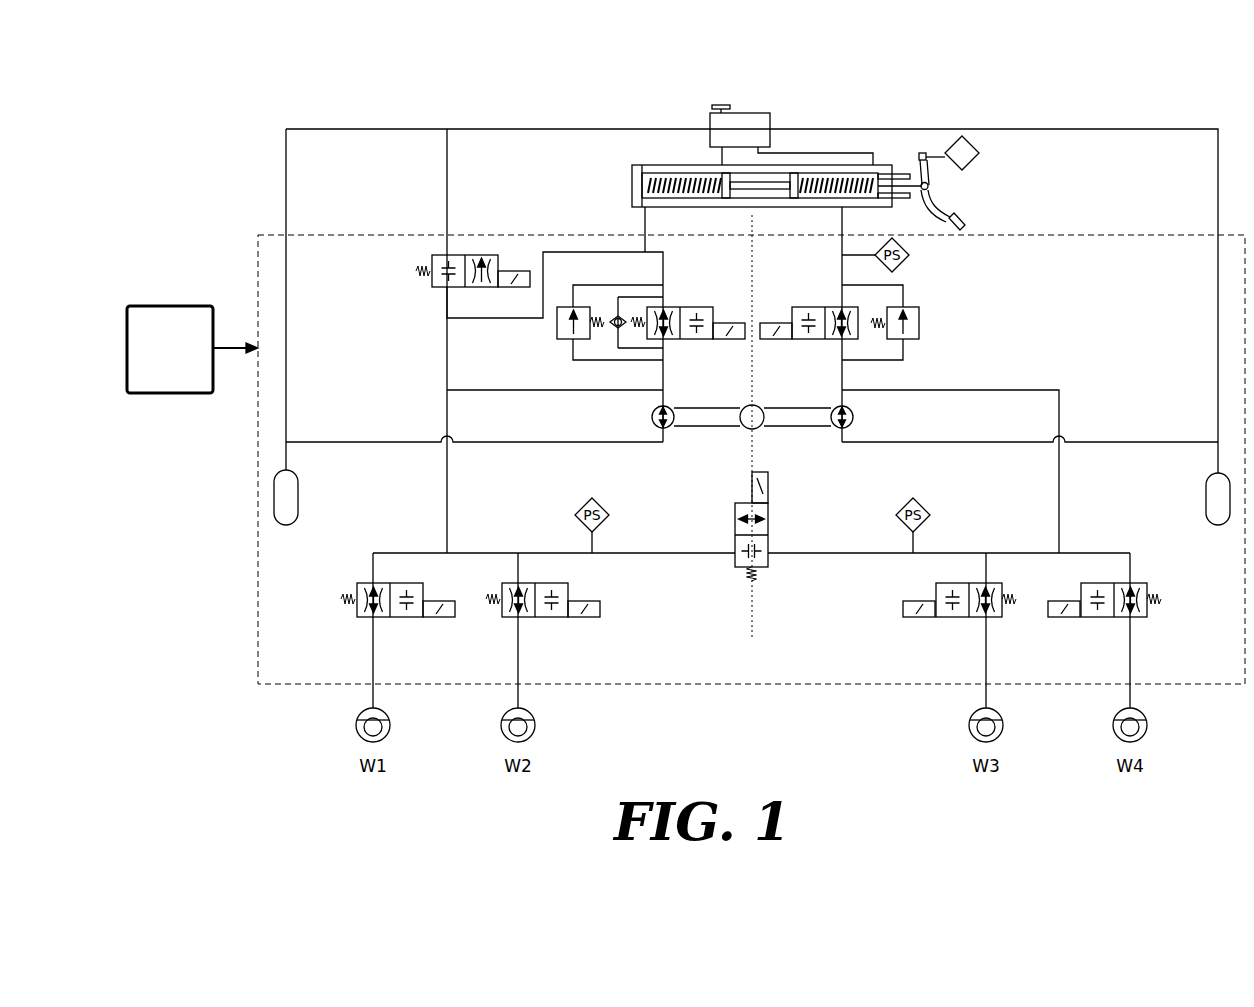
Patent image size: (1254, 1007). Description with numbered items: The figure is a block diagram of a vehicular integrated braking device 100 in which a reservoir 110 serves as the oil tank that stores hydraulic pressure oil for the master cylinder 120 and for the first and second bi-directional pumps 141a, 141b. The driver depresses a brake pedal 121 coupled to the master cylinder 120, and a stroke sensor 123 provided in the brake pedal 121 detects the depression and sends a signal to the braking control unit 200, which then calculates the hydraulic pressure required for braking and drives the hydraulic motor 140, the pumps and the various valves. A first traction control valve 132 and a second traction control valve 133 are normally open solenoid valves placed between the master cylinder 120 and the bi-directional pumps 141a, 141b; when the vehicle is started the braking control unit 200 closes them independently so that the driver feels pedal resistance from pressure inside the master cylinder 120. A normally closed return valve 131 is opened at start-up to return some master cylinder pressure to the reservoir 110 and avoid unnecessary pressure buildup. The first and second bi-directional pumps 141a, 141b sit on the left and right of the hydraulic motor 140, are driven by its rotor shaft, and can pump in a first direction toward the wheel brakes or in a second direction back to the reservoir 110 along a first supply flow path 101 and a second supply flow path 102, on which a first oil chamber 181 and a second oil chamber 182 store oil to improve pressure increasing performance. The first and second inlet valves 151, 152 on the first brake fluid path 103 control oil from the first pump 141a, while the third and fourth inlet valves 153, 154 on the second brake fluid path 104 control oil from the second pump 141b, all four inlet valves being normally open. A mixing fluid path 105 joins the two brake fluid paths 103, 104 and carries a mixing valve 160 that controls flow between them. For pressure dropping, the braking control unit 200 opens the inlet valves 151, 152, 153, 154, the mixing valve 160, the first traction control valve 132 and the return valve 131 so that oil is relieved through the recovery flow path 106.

The braking device 100 is at (246, 449).
The first supply flow path 101 is at (340, 128).
The second supply flow path 102 is at (1070, 128).
The first brake fluid path 103 is at (445, 412).
The second brake fluid path 104 is at (1060, 412).
The mixing fluid path 105 is at (695, 553).
The recovery flow path 106 is at (495, 318).
The reservoir 110 is at (742, 113).
The master cylinder 120 is at (614, 169).
The brake pedal 121 is at (938, 204).
The stroke sensor 123 is at (979, 155).
The return valve 131 is at (430, 283).
The first traction control valve 132 is at (700, 307).
The second traction control valve 133 is at (803, 307).
The hydraulic motor 140 is at (758, 405).
The first bi-directional pump 141a is at (652, 418).
The second bi-directional pump 141b is at (853, 418).
The first inlet valve 151 is at (400, 617).
The second inlet valve 152 is at (545, 617).
The third inlet valve 153 is at (965, 617).
The fourth inlet valve 154 is at (1100, 617).
The mixing valve 160 is at (770, 515).
The first oil chamber 181 is at (286, 525).
The second oil chamber 182 is at (1216, 525).
The braking control unit 200 is at (158, 306).